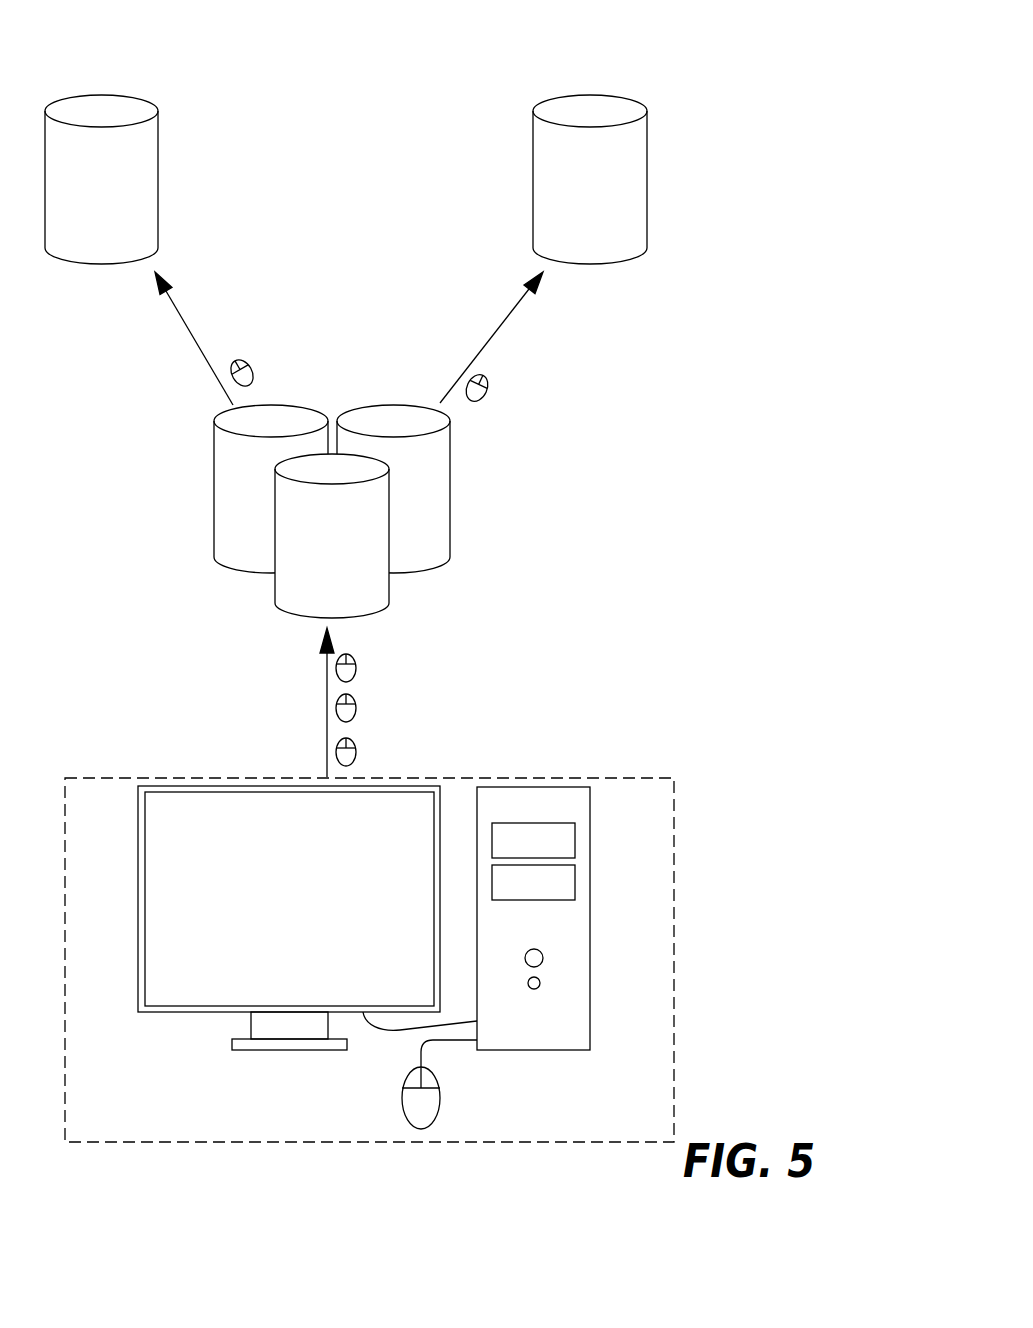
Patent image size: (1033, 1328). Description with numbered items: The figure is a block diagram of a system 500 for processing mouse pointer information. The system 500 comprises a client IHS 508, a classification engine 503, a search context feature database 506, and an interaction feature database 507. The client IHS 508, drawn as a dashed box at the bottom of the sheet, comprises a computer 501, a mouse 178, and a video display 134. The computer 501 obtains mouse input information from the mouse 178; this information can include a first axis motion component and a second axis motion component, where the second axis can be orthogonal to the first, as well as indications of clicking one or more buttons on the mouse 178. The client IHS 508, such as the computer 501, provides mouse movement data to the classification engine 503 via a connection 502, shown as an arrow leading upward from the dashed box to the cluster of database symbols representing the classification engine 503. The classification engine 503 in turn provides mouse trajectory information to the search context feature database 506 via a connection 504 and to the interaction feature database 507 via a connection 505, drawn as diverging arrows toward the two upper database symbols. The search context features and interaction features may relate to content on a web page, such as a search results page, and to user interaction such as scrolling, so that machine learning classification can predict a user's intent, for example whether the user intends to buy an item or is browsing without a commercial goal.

The system 500 is at (788, 102).
The computer 501 is at (590, 925).
The connection 502 is at (327, 712).
The classification engine 503 is at (450, 497).
The connection 504 is at (198, 347).
The connection 505 is at (478, 345).
The search context feature database 506 is at (158, 190).
The interaction feature database 507 is at (533, 190).
The client IHS 508 is at (463, 777).
The video display 134 is at (138, 895).
The mouse 178 is at (440, 1100).